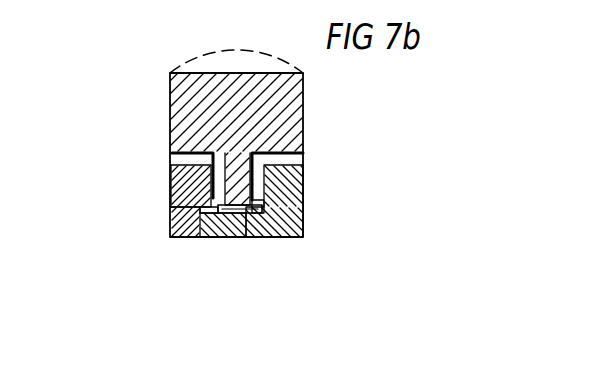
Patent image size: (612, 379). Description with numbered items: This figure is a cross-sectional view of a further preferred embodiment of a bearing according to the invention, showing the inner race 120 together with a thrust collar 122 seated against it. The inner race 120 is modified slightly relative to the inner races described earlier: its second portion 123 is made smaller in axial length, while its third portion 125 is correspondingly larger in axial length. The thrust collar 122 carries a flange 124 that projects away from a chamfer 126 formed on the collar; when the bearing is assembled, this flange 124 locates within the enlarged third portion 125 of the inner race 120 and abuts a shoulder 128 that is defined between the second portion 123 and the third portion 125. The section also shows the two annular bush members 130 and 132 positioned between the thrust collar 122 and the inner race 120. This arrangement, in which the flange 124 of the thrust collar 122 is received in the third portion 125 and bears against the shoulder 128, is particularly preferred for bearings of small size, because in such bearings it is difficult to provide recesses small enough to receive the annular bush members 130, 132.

The inner race 120 is at (303, 212).
The thrust collar 122 is at (171, 180).
The second portion 123 is at (250, 213).
The flange 124 is at (186, 214).
The third portion 125 is at (210, 214).
The chamfer 126 is at (176, 215).
The shoulder 128 is at (243, 213).
The annular bush member 130 is at (303, 160).
The annular bush member 132 is at (178, 157).